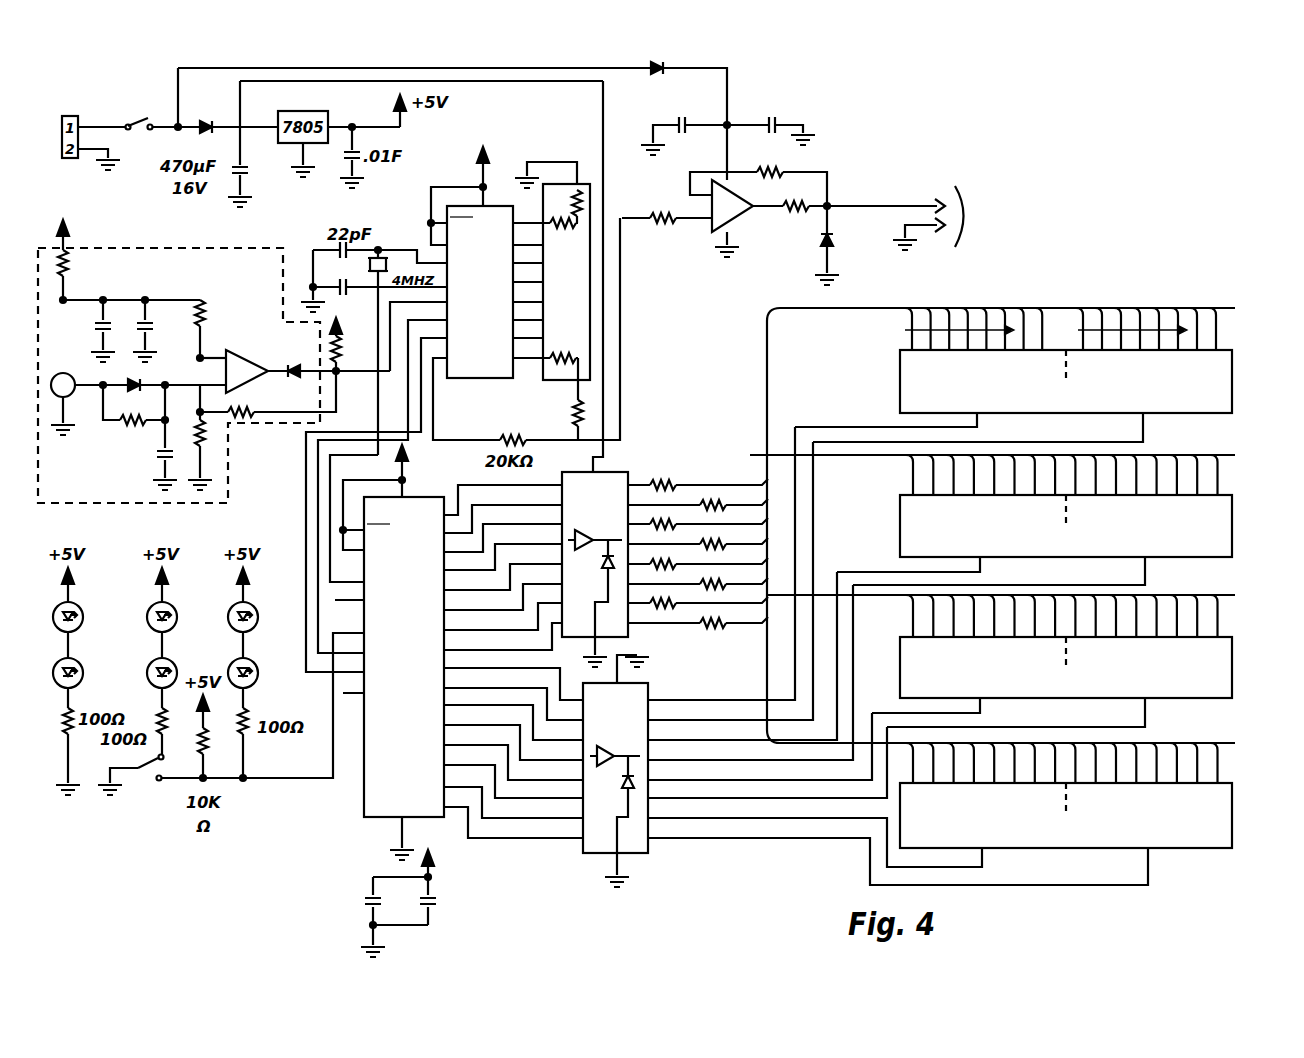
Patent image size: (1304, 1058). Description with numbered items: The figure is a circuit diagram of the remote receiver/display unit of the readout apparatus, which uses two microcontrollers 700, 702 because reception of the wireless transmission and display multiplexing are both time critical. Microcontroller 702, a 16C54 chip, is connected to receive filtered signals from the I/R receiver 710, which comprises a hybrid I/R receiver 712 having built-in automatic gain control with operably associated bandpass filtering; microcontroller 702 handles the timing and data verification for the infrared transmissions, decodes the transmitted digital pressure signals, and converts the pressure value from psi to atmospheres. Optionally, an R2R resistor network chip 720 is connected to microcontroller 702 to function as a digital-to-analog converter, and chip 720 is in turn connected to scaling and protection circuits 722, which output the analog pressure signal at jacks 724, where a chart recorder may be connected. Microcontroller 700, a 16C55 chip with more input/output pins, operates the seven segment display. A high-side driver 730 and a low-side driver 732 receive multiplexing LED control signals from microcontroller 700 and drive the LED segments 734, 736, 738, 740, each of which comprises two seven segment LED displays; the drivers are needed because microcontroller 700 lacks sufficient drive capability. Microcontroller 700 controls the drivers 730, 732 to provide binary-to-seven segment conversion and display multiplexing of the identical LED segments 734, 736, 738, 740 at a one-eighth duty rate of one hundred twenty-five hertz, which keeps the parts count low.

The microcontroller 700 is at (365, 817).
The microcontroller 702 is at (500, 206).
The I/R receiver 710 is at (206, 350).
The hybrid I/R receiver 712 is at (72, 400).
The R2R resistor network chip 720 is at (591, 342).
The scaling and protection circuits 722 is at (885, 106).
The jacks 724 is at (963, 213).
The high-side driver 730 is at (628, 472).
The low-side driver 732 is at (641, 853).
The LED segment 734 is at (1232, 383).
The LED segment 736 is at (1232, 528).
The LED segment 738 is at (1232, 669).
The LED segment 740 is at (1235, 818).